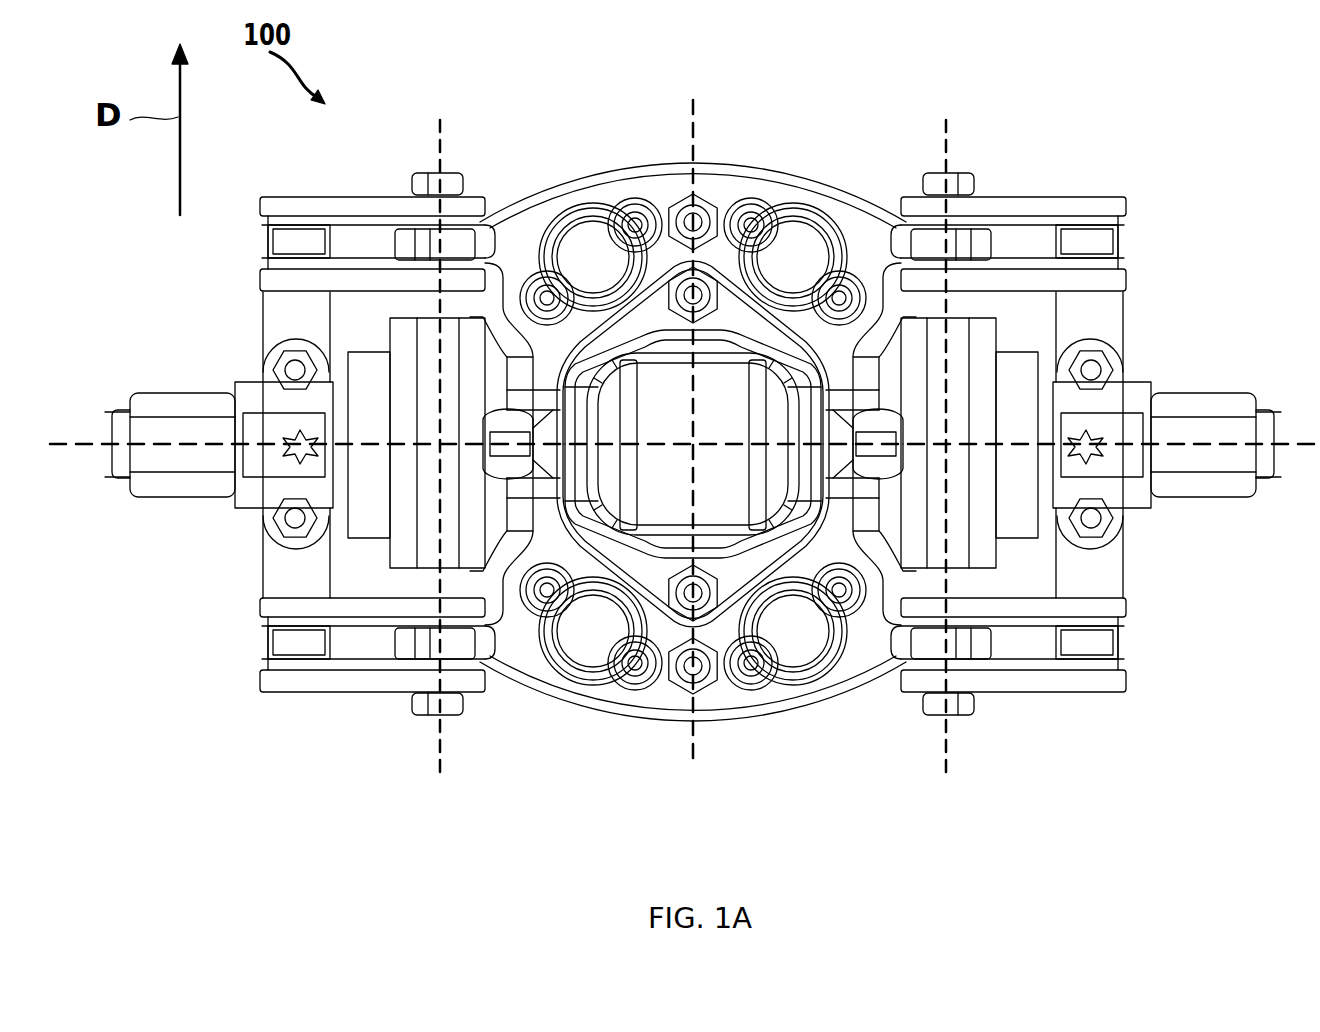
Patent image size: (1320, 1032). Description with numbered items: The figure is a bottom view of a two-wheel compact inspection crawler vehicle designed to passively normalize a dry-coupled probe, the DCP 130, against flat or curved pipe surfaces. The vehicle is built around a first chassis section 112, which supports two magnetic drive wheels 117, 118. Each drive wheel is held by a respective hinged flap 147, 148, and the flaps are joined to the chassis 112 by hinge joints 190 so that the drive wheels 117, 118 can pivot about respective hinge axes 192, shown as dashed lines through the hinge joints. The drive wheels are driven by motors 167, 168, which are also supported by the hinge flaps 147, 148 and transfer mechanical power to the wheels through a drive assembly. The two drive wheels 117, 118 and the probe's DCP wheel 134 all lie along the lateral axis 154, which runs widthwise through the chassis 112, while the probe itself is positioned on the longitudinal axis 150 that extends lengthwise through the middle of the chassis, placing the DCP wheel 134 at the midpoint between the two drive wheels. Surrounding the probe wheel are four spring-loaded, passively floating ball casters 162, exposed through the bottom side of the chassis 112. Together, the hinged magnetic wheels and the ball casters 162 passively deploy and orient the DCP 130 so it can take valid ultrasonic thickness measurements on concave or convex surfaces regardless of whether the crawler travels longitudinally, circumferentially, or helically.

The first chassis section 112 is at (633, 165).
The magnetic drive wheel 117 is at (415, 524).
The magnetic drive wheel 118 is at (965, 360).
The DCP 130 is at (724, 392).
The DCP wheel 134 is at (712, 490).
The hinged flap 147 is at (305, 200).
The hinged flap 148 is at (1112, 200).
The longitudinal axis 150 is at (700, 128).
The lateral axis 154 is at (118, 438).
The spring loaded ball caster 162 is at (590, 235).
The motor 167 is at (210, 398).
The motor 168 is at (1230, 400).
The hinge joint 190 is at (456, 167).
The hinge axis 192 is at (436, 776).